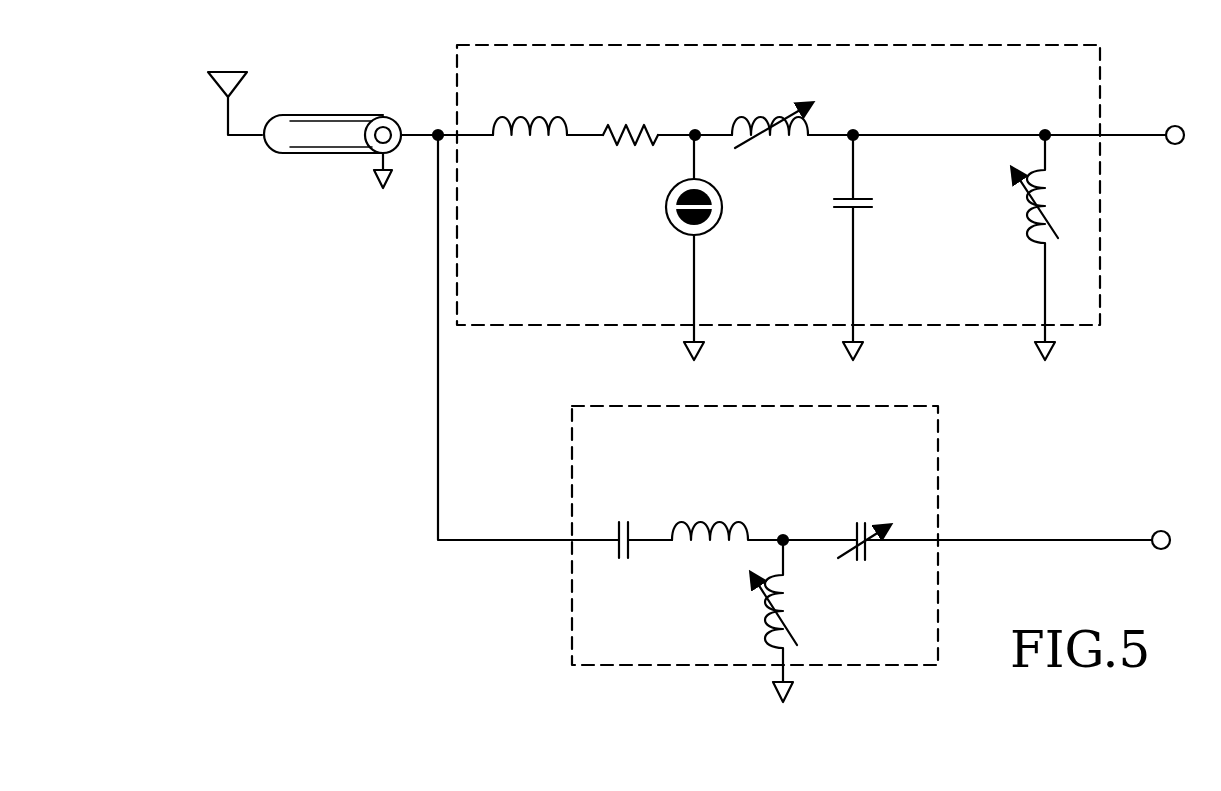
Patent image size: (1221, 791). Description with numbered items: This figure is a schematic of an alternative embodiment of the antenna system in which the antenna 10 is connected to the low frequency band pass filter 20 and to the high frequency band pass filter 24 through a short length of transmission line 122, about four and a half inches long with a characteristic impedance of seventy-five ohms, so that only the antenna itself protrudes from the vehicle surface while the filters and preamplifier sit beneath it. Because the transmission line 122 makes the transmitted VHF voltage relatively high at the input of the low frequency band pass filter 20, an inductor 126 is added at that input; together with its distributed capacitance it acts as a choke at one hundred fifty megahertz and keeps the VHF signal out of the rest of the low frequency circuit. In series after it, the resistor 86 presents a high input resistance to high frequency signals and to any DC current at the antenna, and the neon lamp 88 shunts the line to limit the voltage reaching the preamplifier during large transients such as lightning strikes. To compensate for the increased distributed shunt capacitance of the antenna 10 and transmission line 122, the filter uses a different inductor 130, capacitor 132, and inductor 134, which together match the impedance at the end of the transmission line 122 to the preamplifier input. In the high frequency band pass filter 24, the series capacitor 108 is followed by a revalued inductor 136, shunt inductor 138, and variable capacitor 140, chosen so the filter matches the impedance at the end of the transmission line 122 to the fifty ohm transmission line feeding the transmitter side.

The antenna 10 is at (228, 112).
The transmission line 122 is at (325, 155).
The low frequency band pass filter 20 is at (1102, 92).
The inductor 126 is at (543, 117).
The resistor 86 is at (628, 132).
The neon lamp 88 is at (667, 207).
The inductor 130 is at (768, 120).
The capacitor 132 is at (863, 208).
The inductor 134 is at (1027, 215).
The high frequency band pass filter 24 is at (942, 493).
The capacitor 108 is at (632, 527).
The inductor 136 is at (743, 520).
The inductor 138 is at (765, 615).
The capacitor 140 is at (868, 545).